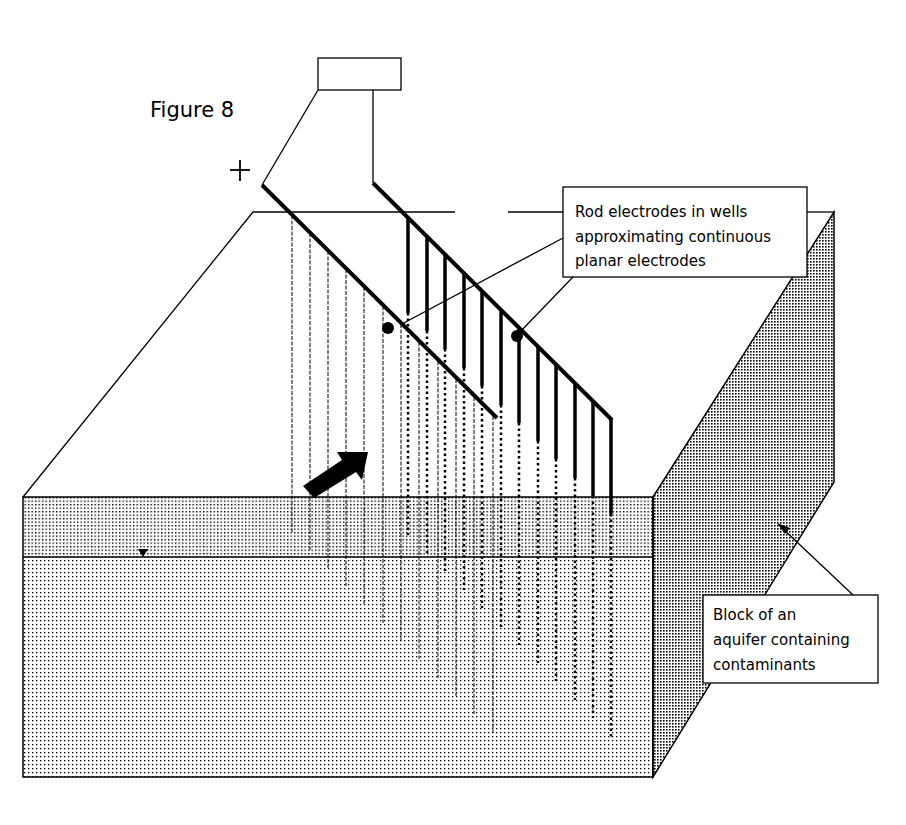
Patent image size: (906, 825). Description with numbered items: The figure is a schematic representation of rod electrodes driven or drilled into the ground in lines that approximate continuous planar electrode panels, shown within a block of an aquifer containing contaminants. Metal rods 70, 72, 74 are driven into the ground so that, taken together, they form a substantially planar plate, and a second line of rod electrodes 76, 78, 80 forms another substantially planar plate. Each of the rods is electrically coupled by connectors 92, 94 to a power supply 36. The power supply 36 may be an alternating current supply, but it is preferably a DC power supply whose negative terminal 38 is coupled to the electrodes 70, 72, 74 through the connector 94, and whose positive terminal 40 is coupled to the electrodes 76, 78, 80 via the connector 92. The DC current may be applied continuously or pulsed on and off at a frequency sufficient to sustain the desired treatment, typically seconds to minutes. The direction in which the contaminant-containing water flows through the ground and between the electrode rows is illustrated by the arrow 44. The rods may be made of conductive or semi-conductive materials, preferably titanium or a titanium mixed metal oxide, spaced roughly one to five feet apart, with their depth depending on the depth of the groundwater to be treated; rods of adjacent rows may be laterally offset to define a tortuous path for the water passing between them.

The power supply 36 is at (359, 74).
The negative terminal 38 is at (369, 175).
The positive terminal 40 is at (228, 176).
The arrow 44 is at (322, 472).
The metal rod 70 is at (406, 218).
The metal rod 72 is at (428, 238).
The metal rod 74 is at (449, 256).
The electrode 76 is at (297, 213).
The electrode 78 is at (314, 236).
The electrode 80 is at (332, 253).
The connector 92 is at (497, 412).
The connector 94 is at (609, 412).